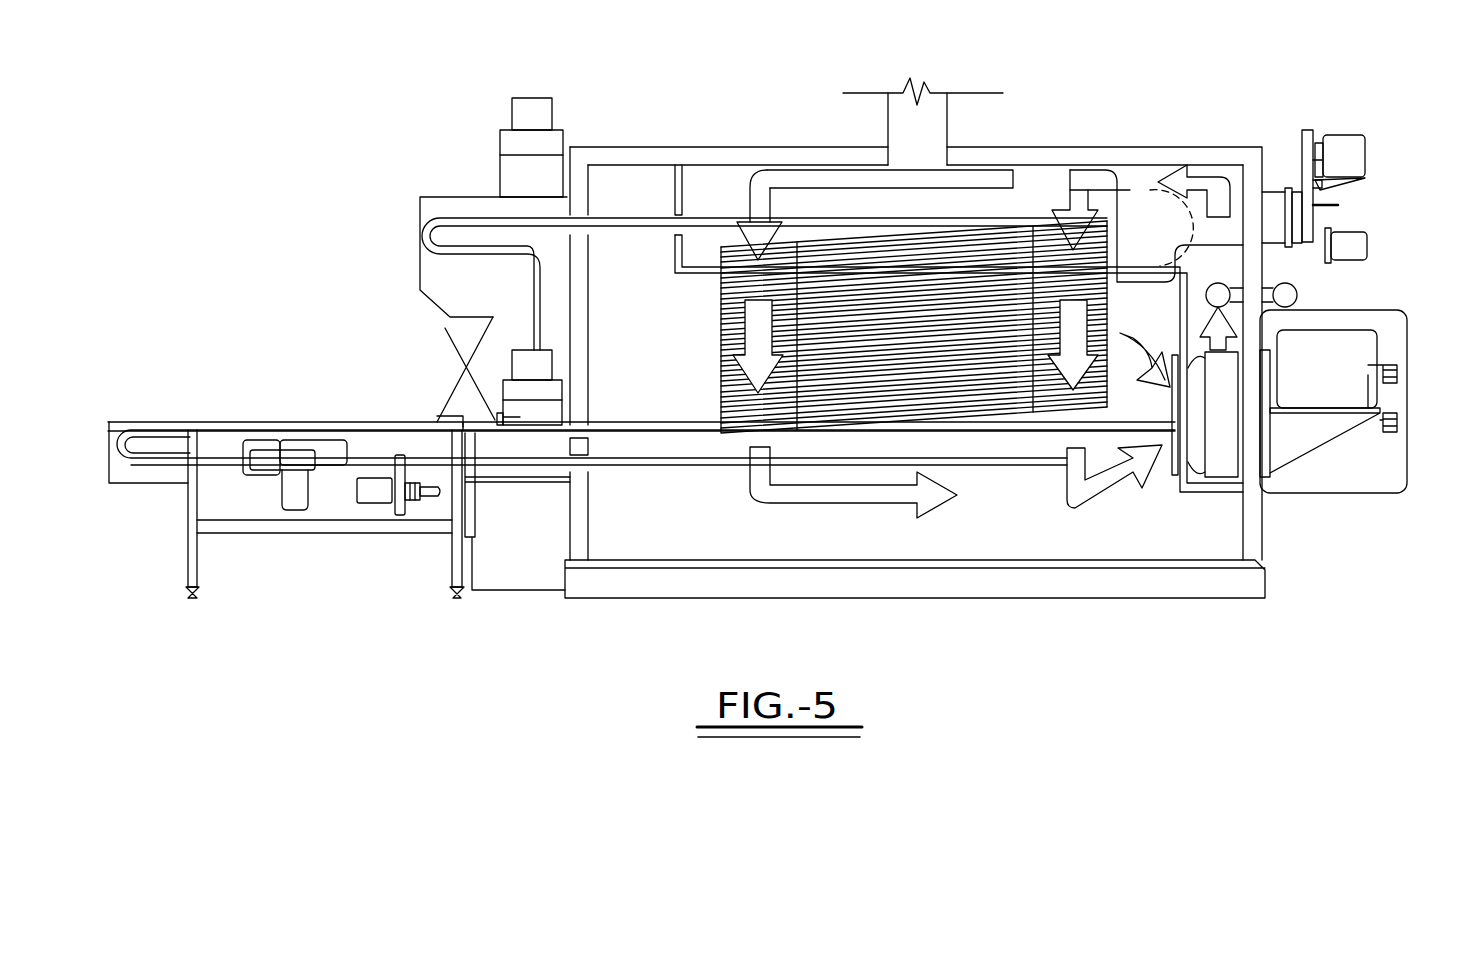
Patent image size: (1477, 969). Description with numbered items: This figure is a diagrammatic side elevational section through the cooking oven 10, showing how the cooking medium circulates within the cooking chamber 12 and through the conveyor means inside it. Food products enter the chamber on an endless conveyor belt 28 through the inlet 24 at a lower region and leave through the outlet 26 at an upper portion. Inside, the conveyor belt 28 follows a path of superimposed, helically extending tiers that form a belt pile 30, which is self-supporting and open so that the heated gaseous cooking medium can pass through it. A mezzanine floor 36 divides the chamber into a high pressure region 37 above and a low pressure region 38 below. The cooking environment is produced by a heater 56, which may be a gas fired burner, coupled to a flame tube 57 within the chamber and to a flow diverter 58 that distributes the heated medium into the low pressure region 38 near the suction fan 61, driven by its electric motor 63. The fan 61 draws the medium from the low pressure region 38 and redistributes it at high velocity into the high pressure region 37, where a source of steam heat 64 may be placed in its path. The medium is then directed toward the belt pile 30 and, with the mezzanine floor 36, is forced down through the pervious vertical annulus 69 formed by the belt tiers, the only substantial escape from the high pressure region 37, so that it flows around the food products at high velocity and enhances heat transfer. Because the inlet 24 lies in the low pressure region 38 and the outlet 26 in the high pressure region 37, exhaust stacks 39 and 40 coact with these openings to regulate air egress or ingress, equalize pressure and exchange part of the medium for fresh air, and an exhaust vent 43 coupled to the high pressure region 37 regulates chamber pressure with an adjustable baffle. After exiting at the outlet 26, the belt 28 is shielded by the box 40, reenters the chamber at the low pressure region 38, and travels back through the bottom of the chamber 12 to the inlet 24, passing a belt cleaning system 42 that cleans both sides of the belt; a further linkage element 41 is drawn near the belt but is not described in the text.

The cooking oven 10 is at (720, 108).
The cooking chamber 12 is at (676, 545).
The inlet 24 is at (592, 427).
The outlet 26 is at (588, 220).
The endless conveyor belt 28 is at (262, 428).
The belt pile 30 is at (712, 333).
The mezzanine floor 36 is at (710, 273).
The high pressure region 37 is at (1024, 202).
The low pressure region 38 is at (1088, 545).
The exhaust stack 39 is at (517, 176).
The exhaust stack 40 is at (500, 416).
The scissor linkage 41 is at (482, 362).
The belt cleaning system 42 is at (302, 538).
The exhaust vent 43 is at (900, 133).
The heater 56 is at (1348, 136).
The flame tube 57 is at (1243, 200).
The flow diverter 58 is at (1170, 241).
The suction fan 61 is at (1230, 458).
The electric motor 63 is at (1378, 348).
The source of steam heat 64 is at (1222, 290).
The vertical annulus 69 is at (722, 402).